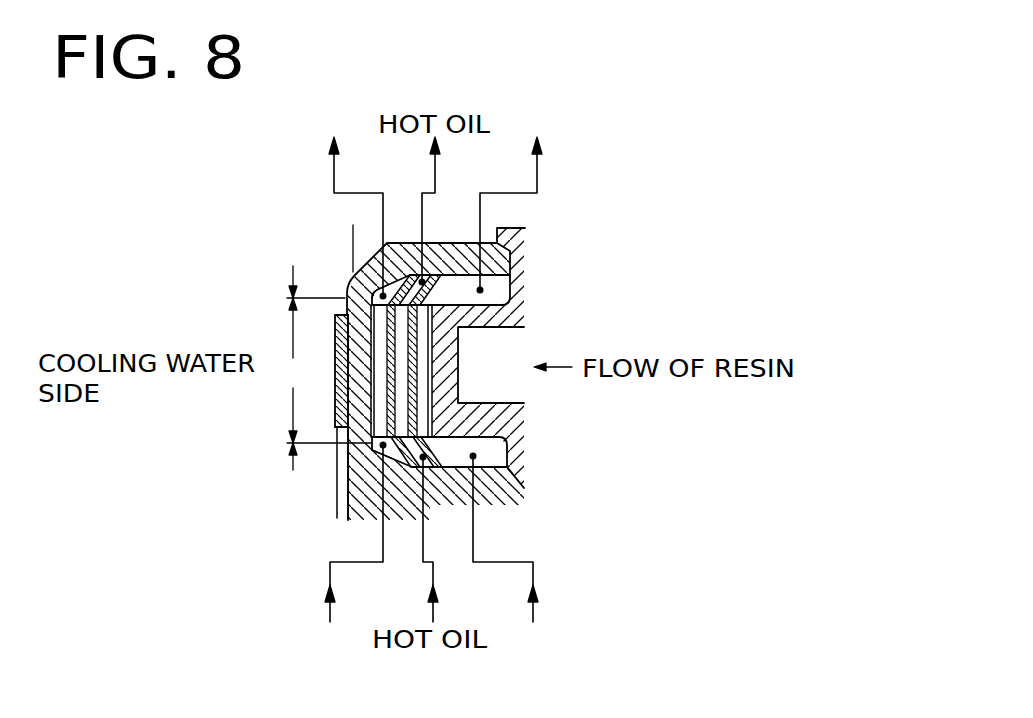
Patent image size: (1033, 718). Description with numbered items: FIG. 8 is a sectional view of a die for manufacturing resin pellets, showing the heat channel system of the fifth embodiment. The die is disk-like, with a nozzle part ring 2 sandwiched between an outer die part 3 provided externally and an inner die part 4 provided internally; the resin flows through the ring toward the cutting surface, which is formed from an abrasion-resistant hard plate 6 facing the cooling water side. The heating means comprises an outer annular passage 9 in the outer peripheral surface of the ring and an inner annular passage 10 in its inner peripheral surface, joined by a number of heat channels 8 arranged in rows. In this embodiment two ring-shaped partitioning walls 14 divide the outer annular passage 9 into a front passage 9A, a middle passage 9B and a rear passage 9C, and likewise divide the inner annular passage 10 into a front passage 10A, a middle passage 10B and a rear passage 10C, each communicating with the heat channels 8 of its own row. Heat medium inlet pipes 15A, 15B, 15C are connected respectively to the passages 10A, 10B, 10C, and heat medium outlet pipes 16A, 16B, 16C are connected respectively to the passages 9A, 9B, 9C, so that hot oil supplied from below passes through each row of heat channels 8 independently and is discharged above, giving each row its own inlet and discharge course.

The nozzle part ring 2 is at (329, 370).
The outer die part 3 is at (315, 269).
The inner die part 4 is at (294, 474).
The hard plate 6 is at (336, 407).
The heat channels 8 is at (345, 313).
The outer annular passage 9 is at (501, 264).
The front passage 9A is at (385, 284).
The middle passage 9B is at (421, 276).
The rear passage 9C is at (503, 292).
The inner annular passage 10 is at (508, 449).
The front passage 10A is at (381, 458).
The middle passage 10B is at (413, 460).
The rear passage 10C is at (498, 478).
The partitioning walls 14 is at (452, 272).
The heat medium inlet pipe 15A is at (328, 606).
The heat medium inlet pipe 15B is at (434, 608).
The heat medium inlet pipe 15C is at (534, 608).
The heat medium outlet pipe 16A is at (334, 164).
The heat medium outlet pipe 16B is at (435, 162).
The heat medium outlet pipe 16C is at (537, 162).